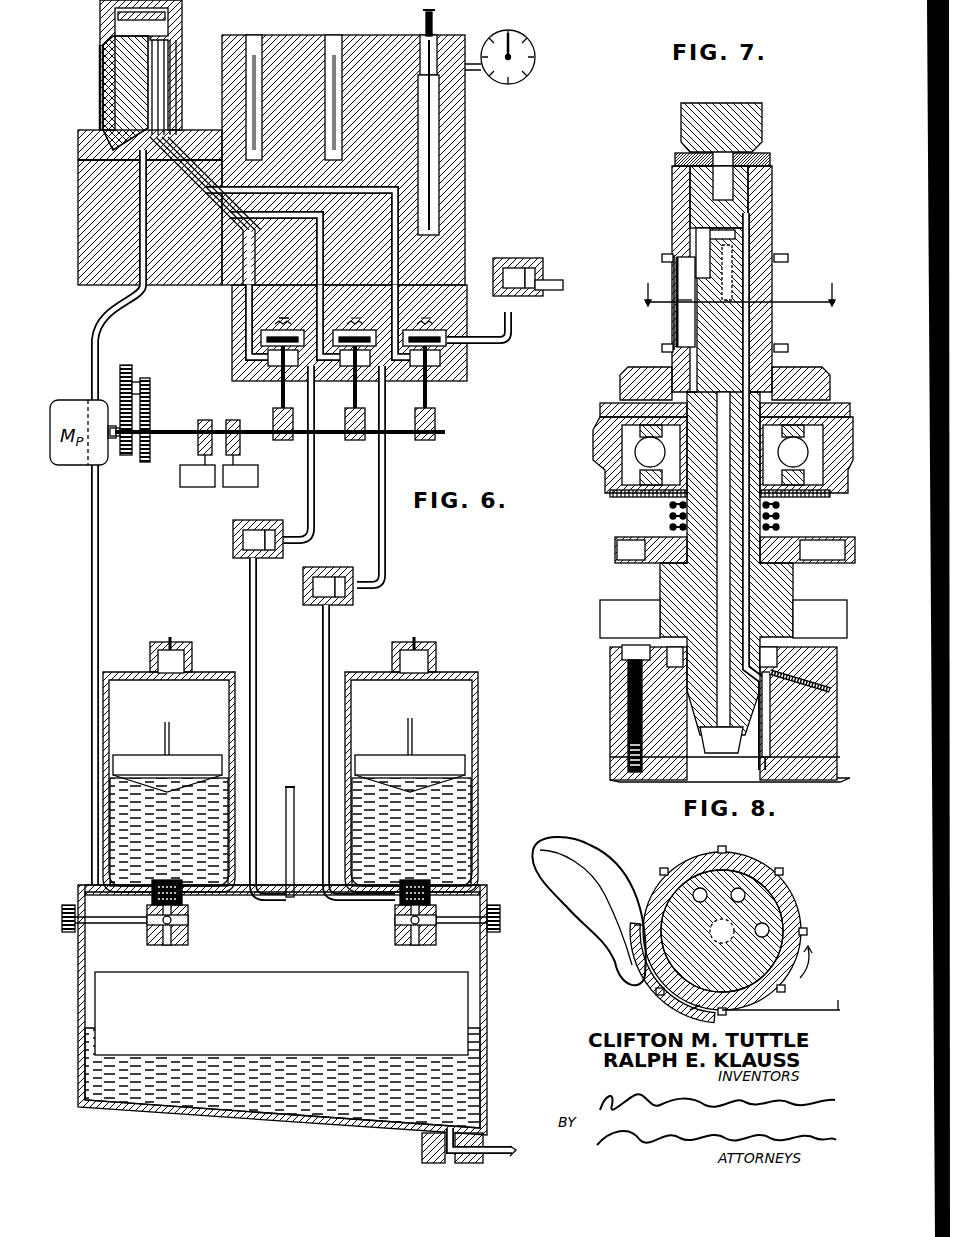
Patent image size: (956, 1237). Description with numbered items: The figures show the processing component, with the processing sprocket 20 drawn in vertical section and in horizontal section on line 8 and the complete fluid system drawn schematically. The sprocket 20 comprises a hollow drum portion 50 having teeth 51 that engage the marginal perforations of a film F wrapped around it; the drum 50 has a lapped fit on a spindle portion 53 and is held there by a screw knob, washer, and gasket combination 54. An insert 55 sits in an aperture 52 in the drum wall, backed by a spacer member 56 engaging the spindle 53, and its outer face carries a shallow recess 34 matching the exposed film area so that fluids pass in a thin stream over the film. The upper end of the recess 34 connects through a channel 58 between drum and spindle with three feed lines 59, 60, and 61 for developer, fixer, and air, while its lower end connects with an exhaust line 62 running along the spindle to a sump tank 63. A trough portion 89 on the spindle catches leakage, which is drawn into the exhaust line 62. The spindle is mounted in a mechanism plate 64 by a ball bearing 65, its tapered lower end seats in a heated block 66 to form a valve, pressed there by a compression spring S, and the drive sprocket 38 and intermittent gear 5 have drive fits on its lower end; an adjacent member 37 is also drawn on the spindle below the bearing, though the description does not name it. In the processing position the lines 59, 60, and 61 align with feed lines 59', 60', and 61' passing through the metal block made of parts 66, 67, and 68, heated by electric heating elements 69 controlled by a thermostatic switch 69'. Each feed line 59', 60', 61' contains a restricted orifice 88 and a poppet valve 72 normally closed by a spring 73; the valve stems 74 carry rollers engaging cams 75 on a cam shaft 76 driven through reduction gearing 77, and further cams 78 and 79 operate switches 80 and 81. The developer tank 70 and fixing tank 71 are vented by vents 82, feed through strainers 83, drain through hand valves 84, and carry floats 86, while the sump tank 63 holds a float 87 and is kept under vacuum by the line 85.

In FIG. 6, the channel 58 is at (108, 30).
In FIG. 7, the channel 58 is at (697, 250).
In FIG. 6, the processing sprocket 20 is at (104, 43).
In FIG. 6, the film F is at (100, 70).
In FIG. 7, the film F is at (676, 312).
In FIG. 8, the film F is at (781, 978).
In FIG. 6, the recess 34 is at (103, 90).
In FIG. 7, the recess 34 is at (678, 325).
In FIG. 8, the recess 34 is at (650, 985).
In FIG. 6, the exhaust line 62 is at (105, 128).
In FIG. 7, the exhaust line 62 is at (717, 581).
In FIG. 8, the exhaust line 62 is at (700, 880).
In FIG. 6, the feed line 60 is at (185, 71).
In FIG. 7, the feed line 60 is at (691, 219).
In FIG. 8, the feed line 60 is at (722, 908).
In FIG. 6, the feed line 59 is at (188, 83).
In FIG. 7, the feed line 59 is at (686, 235).
In FIG. 8, the feed line 59 is at (759, 865).
In FIG. 6, the feed line 61 is at (272, 162).
In FIG. 7, the feed line 61 is at (783, 491).
In FIG. 8, the feed line 61 is at (735, 931).
In FIG. 6, the block 66 is at (198, 135).
In FIG. 7, the block 66 is at (612, 712).
In FIG. 6, the electric heating elements 69 is at (294, 83).
In FIG. 6, the thermostatic switch 69' is at (445, 121).
In FIG. 6, the block 67 is at (455, 203).
In FIG. 7, the block 67 is at (800, 780).
In FIG. 6, the block 68 is at (463, 378).
In FIG. 6, the springs 73 is at (268, 324).
In FIG. 6, the spring-actuated poppet valve 72 is at (268, 343).
In FIG. 6, the valve stems 74 is at (353, 388).
In FIG. 6, the cam 75 is at (279, 443).
In FIG. 6, the cam shaft 76 is at (178, 432).
In FIG. 6, the reduction gearing 77 is at (146, 375).
In FIG. 6, the cam 78 is at (203, 418).
In FIG. 6, the cam 79 is at (234, 418).
In FIG. 6, the switch 80 is at (193, 478).
In FIG. 6, the switch 81 is at (241, 478).
In FIG. 6, the interchangeable restricted orifice 88 is at (278, 532).
In FIG. 6, the feed line 60' is at (315, 460).
In FIG. 6, the feed line 59' is at (363, 475).
In FIG. 6, the feed line 61' is at (552, 263).
In FIG. 6, the vents 82 is at (178, 650).
In FIG. 6, the tank 71 is at (169, 782).
In FIG. 6, the tank 70 is at (411, 782).
In FIG. 6, the float 86 is at (137, 758).
In FIG. 6, the line 85 is at (290, 786).
In FIG. 6, the strainers 83 is at (188, 910).
In FIG. 6, the hand valve 84 is at (150, 925).
In FIG. 6, the float 87 is at (283, 985).
In FIG. 6, the sump tank 63 is at (488, 1003).
In FIG. 7, the screw knob, washer, and gasket combination 54 is at (762, 148).
In FIG. 7, the hollow drum portion 50 is at (768, 220).
In FIG. 7, the teeth 51 is at (788, 258).
In FIG. 8, the teeth 51 is at (731, 930).
In FIG. 7, the spindle portion 53 is at (738, 332).
In FIG. 7, the trough portion 89 is at (625, 388).
In FIG. 7, the mechanism plate 64 is at (596, 440).
In FIG. 7, the ball bearing 65 is at (618, 465).
In FIG. 7, the ring 37 is at (660, 535).
In FIG. 7, the drive sprocket 38 is at (620, 552).
In FIG. 7, the compression spring S is at (778, 520).
In FIG. 7, the intermittent gear 5 is at (605, 635).
In FIG. 7, the aperture 52 is at (665, 350).
In FIG. 8, the aperture 52 is at (638, 920).
In FIG. 7, the insert 55 is at (676, 304).
In FIG. 8, the insert 55 is at (640, 962).
In FIG. 7, the spacer member 56 is at (662, 258).
In FIG. 8, the spacer member 56 is at (690, 1010).
In FIG. 7, the section line 8 is at (737, 283).